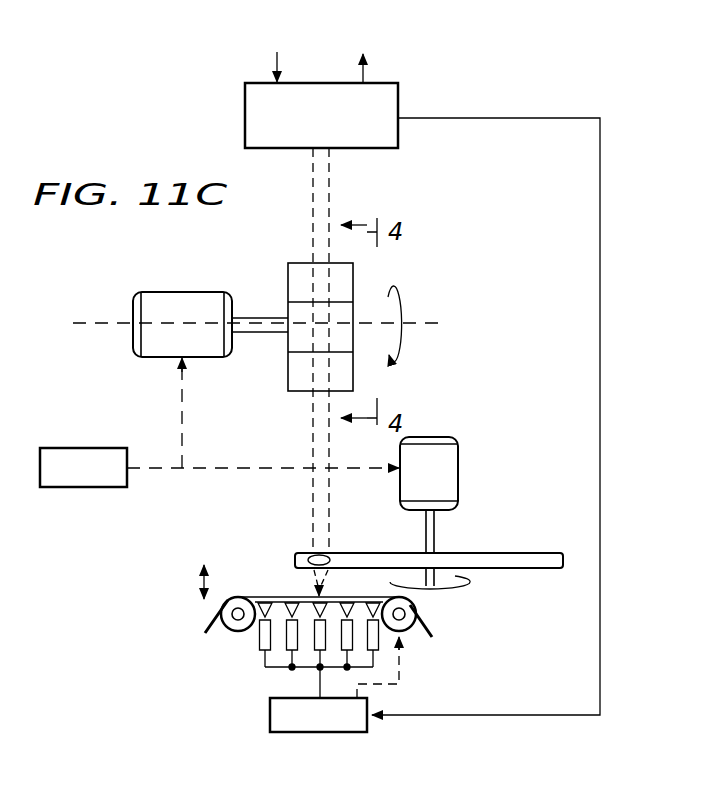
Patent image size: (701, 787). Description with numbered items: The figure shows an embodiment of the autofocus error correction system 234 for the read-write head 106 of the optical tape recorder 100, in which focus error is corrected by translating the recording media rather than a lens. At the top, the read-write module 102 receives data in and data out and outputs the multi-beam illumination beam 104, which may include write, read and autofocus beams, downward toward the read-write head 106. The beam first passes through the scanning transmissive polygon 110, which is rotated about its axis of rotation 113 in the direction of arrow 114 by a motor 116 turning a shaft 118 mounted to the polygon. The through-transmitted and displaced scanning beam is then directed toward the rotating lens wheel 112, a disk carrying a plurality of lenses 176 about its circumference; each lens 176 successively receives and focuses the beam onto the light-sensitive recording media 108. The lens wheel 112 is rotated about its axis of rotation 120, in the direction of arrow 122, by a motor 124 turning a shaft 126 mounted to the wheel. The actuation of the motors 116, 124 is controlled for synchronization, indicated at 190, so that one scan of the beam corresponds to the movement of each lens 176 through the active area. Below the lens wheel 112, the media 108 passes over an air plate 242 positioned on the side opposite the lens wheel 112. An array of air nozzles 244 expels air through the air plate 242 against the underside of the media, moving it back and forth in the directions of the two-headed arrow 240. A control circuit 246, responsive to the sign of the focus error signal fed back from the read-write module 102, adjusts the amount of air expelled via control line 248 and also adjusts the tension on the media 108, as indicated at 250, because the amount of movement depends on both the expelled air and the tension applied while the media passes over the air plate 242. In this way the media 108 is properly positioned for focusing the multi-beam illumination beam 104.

The optical tape recorder 100 is at (446, 88).
The read-write module 102 is at (246, 100).
The multi-beam illumination beam 104 is at (346, 196).
The read-write head 106 is at (489, 349).
The recording media 108 is at (212, 621).
The scanning transmissive polygon 110 is at (288, 272).
The lens wheel 112 is at (537, 570).
The axis of rotation 113 is at (102, 324).
The arrow 114 is at (398, 305).
The motor 116 is at (172, 292).
The shaft 118 is at (263, 338).
The axis of rotation 120 is at (431, 590).
The arrow 122 is at (450, 579).
The motor 124 is at (430, 437).
The shaft 126 is at (436, 537).
The lens 176 is at (337, 553).
The synchronization 190 is at (158, 466).
The autofocus error correction system 234 is at (131, 680).
The two-headed arrow 240 is at (197, 578).
The air plate 242 is at (278, 600).
The air nozzles 244 is at (234, 649).
The control circuit 246 is at (270, 712).
The control line 248 is at (318, 676).
The tension adjustment 250 is at (409, 669).